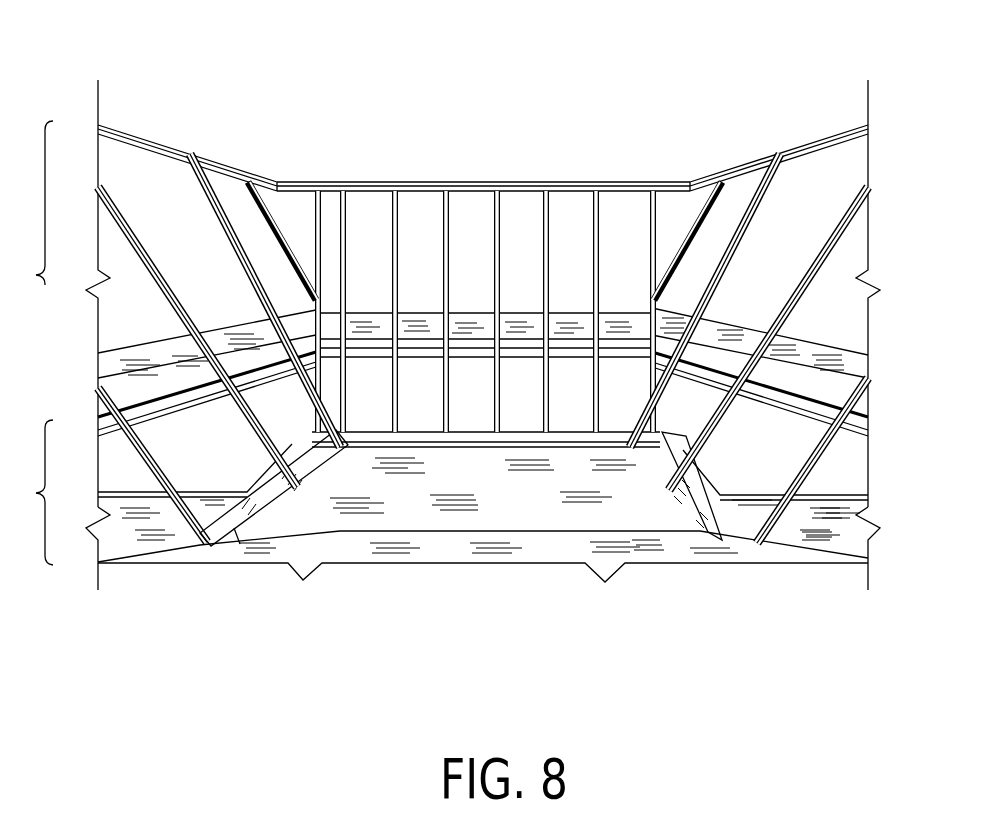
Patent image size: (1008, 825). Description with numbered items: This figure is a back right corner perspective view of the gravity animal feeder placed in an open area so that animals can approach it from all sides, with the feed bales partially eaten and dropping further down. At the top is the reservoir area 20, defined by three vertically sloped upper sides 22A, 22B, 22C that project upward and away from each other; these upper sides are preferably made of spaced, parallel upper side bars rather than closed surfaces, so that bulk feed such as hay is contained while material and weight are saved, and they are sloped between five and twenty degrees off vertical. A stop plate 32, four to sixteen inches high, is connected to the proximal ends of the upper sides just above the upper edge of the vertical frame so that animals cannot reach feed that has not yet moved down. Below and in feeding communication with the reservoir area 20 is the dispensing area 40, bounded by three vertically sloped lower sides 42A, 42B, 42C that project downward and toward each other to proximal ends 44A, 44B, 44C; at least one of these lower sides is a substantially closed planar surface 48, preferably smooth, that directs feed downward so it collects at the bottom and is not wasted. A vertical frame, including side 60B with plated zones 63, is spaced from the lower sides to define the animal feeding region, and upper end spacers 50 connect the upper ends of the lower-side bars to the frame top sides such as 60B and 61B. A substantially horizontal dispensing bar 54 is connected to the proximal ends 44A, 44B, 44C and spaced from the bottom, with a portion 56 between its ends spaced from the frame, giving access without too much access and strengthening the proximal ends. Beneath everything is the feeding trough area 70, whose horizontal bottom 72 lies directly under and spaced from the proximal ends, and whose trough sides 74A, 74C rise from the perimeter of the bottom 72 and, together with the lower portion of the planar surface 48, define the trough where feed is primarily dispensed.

The reservoir area 20 is at (442, 293).
The vertically sloped upper side 22A is at (749, 216).
The vertically sloped upper side 22B is at (448, 233).
The vertically sloped upper side 22C is at (124, 213).
The stop plate 32 is at (245, 335).
The dispensing area 40 is at (29, 492).
The vertically sloped lower side 42A is at (802, 480).
The vertically sloped lower side 42B is at (387, 416).
The vertically sloped lower side 42C is at (146, 466).
The proximal end 44A is at (665, 492).
The proximal end 44B is at (593, 447).
The proximal end 44C is at (326, 465).
The substantially closed planar surface 48 is at (450, 553).
The upper end spacer 50 is at (210, 380).
The dispensing bar 54 is at (480, 440).
The portion of the dispensing bar 56 is at (540, 447).
The vertical frame side 60B is at (828, 555).
The front frame side 61B is at (583, 350).
The plated zone 63 is at (117, 540).
The feeding trough area 70 is at (240, 541).
The bottom 72 is at (477, 523).
The trough side 74A is at (715, 540).
The trough side 74C is at (265, 505).